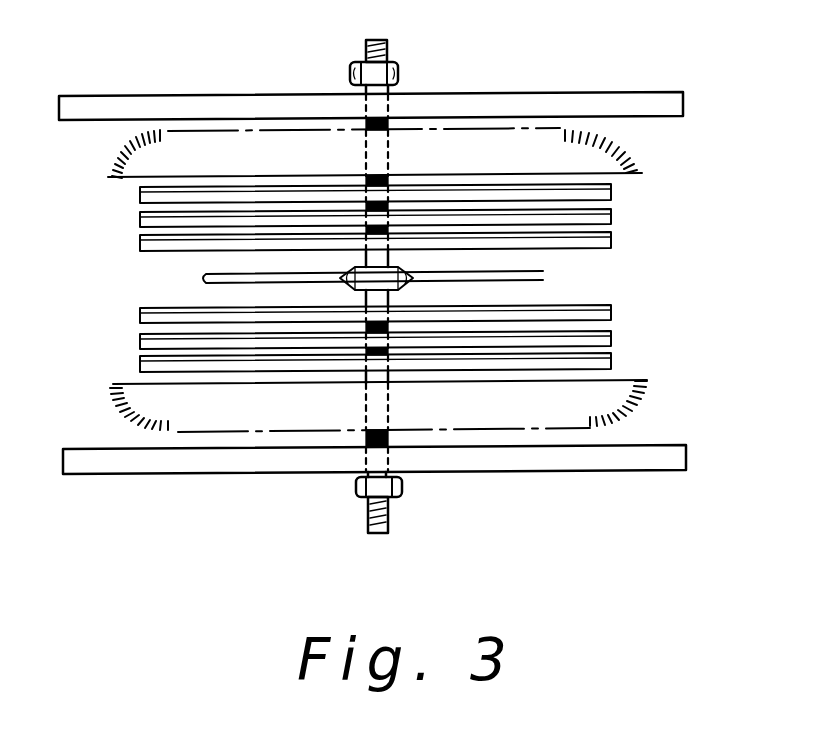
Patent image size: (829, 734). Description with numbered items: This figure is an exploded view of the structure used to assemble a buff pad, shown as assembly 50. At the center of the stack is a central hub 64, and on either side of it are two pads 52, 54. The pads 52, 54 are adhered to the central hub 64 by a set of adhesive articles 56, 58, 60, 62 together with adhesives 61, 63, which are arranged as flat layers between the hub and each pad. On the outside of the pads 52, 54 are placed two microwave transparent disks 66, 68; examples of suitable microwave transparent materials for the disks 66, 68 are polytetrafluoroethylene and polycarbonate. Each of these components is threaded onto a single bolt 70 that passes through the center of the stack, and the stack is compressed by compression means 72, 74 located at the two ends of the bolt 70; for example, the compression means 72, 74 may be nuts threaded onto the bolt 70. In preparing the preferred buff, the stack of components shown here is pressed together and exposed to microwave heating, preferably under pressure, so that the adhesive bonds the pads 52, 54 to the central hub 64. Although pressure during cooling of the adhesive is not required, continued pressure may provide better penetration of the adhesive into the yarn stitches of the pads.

The assembly 50 is at (143, 572).
The pad 52 is at (623, 157).
The pad 54 is at (640, 389).
The adhesive article 56 is at (140, 197).
The adhesive article 58 is at (140, 365).
The adhesive article 60 is at (140, 246).
The adhesive 61 is at (611, 216).
The adhesive article 62 is at (140, 315).
The adhesive 63 is at (611, 337).
The central hub 64 is at (543, 277).
The microwave transparent disk 66 is at (662, 91).
The microwave transparent disk 68 is at (663, 472).
The bolt 70 is at (388, 518).
The compression means 72 is at (357, 486).
The compression means 74 is at (398, 68).